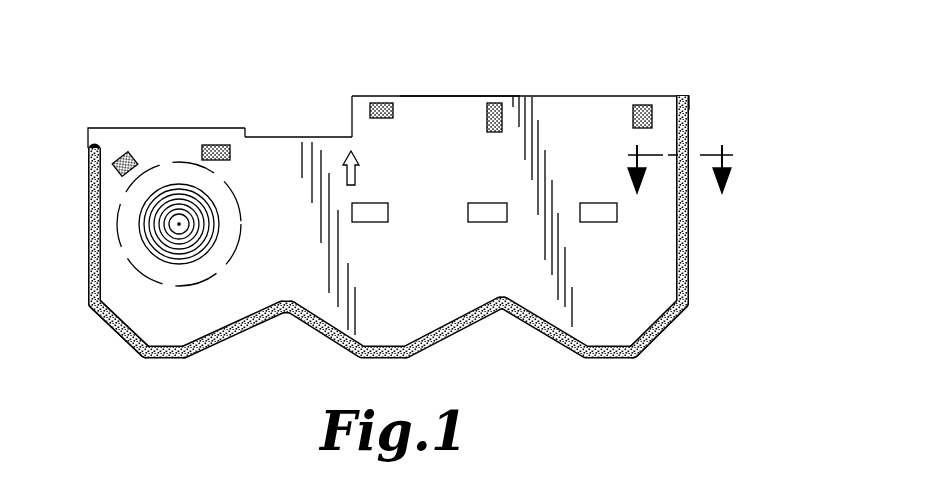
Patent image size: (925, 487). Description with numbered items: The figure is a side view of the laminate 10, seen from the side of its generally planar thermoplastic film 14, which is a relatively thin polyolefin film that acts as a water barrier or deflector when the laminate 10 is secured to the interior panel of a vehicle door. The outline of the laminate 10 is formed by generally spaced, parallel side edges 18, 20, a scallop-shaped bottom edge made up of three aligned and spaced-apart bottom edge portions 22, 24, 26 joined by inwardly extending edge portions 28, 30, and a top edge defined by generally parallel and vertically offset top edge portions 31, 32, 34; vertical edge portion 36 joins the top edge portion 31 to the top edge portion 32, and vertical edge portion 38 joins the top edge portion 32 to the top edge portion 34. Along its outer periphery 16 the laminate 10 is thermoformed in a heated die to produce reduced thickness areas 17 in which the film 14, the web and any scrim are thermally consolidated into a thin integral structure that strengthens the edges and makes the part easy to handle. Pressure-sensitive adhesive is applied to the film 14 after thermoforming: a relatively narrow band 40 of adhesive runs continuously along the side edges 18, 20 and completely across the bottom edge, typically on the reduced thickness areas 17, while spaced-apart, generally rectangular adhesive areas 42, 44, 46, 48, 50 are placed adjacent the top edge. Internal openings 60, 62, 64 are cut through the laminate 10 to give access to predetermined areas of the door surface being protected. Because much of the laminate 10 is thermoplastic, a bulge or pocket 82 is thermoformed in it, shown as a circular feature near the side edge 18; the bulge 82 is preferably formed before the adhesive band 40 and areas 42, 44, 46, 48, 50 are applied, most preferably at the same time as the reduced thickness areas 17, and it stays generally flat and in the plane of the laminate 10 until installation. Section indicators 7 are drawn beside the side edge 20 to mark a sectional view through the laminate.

The laminate 10 is at (391, 209).
The thermoplastic film 14 is at (309, 286).
The outer periphery 16 is at (420, 95).
The reduced thickness areas 17 is at (683, 95).
The side edge 18 is at (87, 250).
The side edge 20 is at (690, 280).
The bottom edge portion 22 is at (157, 360).
The bottom edge portion 24 is at (387, 360).
The bottom edge portion 26 is at (613, 358).
The inwardly extending edge portion 28 is at (220, 337).
The inwardly extending edge portion 30 is at (465, 325).
The top edge portion 31 is at (175, 127).
The top edge portion 32 is at (298, 137).
The top edge portion 34 is at (447, 95).
The vertical edge portion 36 is at (255, 127).
The vertical edge portion 38 is at (352, 107).
The adhesive band 40 is at (87, 221).
The adhesive area 42 is at (122, 152).
The adhesive area 44 is at (230, 155).
The adhesive area 46 is at (385, 103).
The adhesive area 48 is at (495, 103).
The adhesive area 50 is at (640, 105).
The opening 60 is at (372, 216).
The opening 62 is at (492, 216).
The opening 64 is at (599, 216).
The bulge or pocket 82 is at (133, 207).
The section line 7- 7 is at (690, 193).